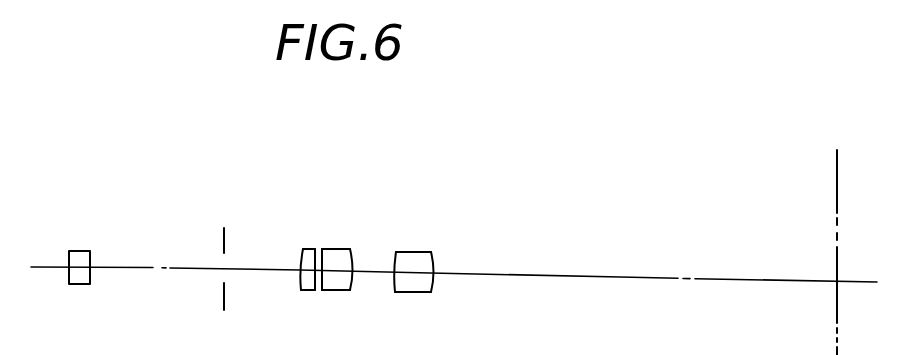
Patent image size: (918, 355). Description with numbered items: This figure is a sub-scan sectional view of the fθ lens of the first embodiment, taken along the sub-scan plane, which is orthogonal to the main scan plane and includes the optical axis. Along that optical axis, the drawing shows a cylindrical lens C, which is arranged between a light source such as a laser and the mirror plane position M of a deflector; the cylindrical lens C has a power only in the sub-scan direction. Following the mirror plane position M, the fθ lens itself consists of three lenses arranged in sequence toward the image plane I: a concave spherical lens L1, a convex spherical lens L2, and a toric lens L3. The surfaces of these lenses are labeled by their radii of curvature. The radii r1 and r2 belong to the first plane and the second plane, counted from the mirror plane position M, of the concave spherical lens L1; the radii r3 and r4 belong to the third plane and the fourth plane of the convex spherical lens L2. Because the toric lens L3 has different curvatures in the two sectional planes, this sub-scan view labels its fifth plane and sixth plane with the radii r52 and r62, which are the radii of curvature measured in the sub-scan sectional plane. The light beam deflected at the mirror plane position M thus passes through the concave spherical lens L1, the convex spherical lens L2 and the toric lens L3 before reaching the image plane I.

The cylindrical lens C is at (80, 251).
The mirror plane position M is at (224, 251).
The concave spherical lens L1 is at (304, 285).
The convex spherical lens L2 is at (356, 285).
The toric lens L3 is at (428, 285).
The radius of curvature of the first plane r1 is at (302, 290).
The radius of curvature of the second plane r2 is at (314, 290).
The radius of curvature of the third plane r3 is at (324, 290).
The radius of curvature of the fourth plane r4 is at (351, 290).
The radius of curvature of the fifth plane in the sub-scan sectional plane r52 is at (396, 292).
The radius of curvature of the sixth plane in the sub-scan sectional plane r62 is at (432, 292).
The image plane I is at (833, 118).